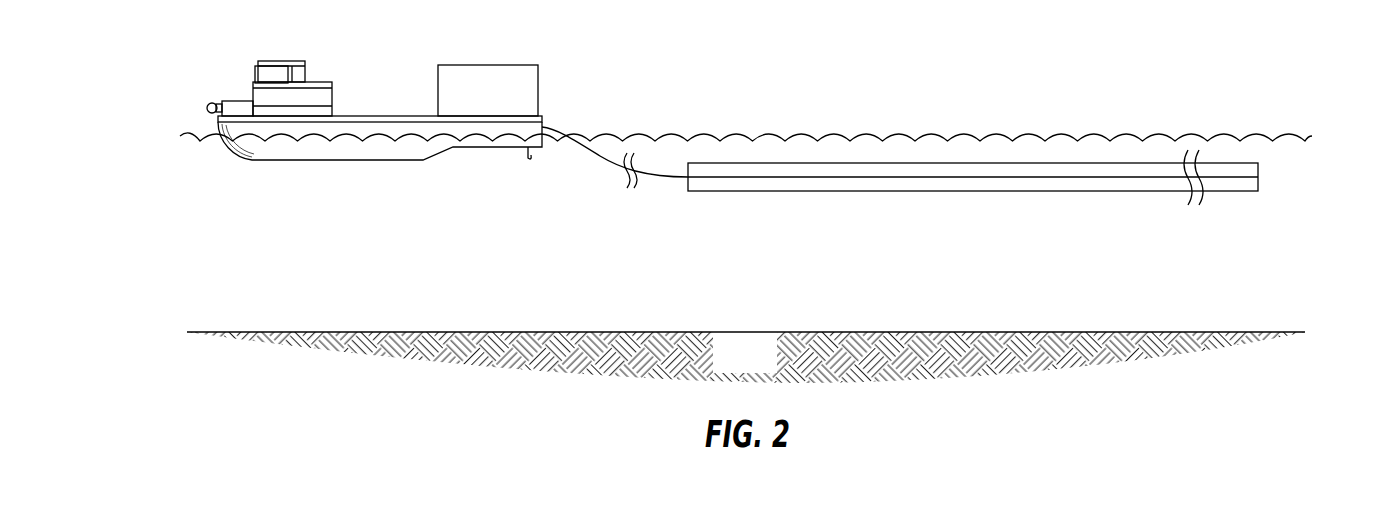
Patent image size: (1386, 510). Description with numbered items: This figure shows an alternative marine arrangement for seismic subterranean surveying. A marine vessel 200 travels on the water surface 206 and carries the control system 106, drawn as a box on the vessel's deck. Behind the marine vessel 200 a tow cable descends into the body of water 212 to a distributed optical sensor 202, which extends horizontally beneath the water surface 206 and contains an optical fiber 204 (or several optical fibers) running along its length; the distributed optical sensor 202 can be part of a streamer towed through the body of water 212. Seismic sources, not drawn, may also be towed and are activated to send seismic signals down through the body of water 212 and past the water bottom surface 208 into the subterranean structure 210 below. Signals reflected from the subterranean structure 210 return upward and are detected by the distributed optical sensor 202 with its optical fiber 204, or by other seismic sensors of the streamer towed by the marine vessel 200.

The control system 106 is at (488, 64).
The marine vessel 200 is at (352, 116).
The distributed optical sensor 202 is at (957, 191).
The optical fiber 204 is at (862, 178).
The water surface 206 is at (862, 136).
The water bottom surface 208 is at (790, 332).
The subterranean structure 210 is at (769, 367).
The body of water 212 is at (444, 248).